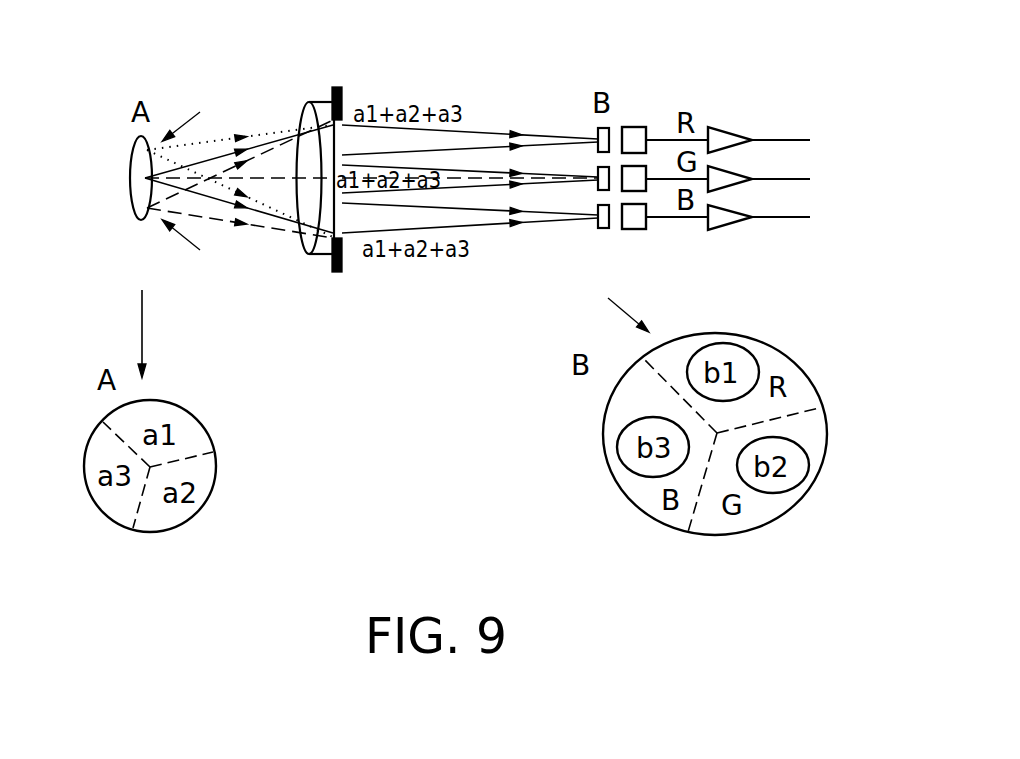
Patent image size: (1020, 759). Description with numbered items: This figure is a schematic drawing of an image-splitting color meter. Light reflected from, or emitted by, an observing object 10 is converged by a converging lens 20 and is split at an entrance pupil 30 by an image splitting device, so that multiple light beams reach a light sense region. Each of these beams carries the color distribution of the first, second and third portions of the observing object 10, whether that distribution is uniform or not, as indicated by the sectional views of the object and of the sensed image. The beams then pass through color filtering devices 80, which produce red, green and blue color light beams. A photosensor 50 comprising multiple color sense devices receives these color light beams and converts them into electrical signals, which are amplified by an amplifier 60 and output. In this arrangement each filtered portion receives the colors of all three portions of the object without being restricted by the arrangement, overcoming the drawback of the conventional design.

The observing object 10 is at (137, 210).
The converging lens 20 is at (302, 236).
The entrance pupil 30 is at (343, 265).
The photosensor 50 is at (647, 147).
The amplifier 60 is at (735, 213).
The color filtering devices 80 is at (612, 220).